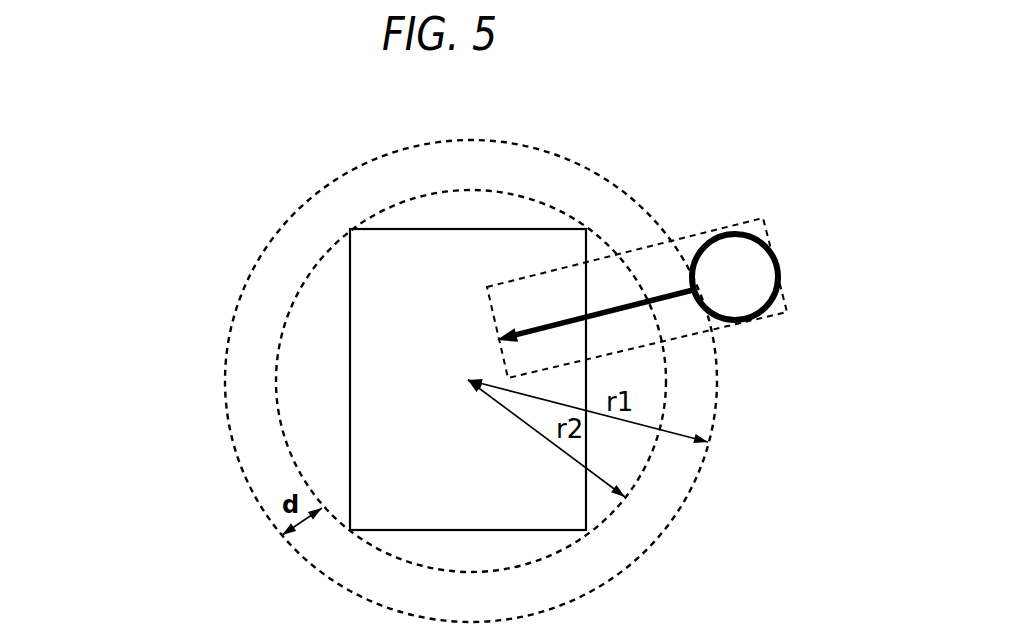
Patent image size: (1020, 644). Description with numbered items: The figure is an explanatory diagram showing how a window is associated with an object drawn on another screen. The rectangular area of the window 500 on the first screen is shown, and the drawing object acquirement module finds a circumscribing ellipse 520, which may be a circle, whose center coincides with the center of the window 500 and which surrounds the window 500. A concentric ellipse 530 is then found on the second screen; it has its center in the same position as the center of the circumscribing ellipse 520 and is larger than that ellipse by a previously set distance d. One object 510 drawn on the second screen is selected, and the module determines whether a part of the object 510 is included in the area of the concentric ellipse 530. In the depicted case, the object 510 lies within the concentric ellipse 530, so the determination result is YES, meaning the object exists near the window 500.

The window 500 is at (350, 427).
The object 510 is at (722, 233).
The circumscribing ellipse 520 is at (280, 337).
The concentric ellipse 530 is at (273, 235).